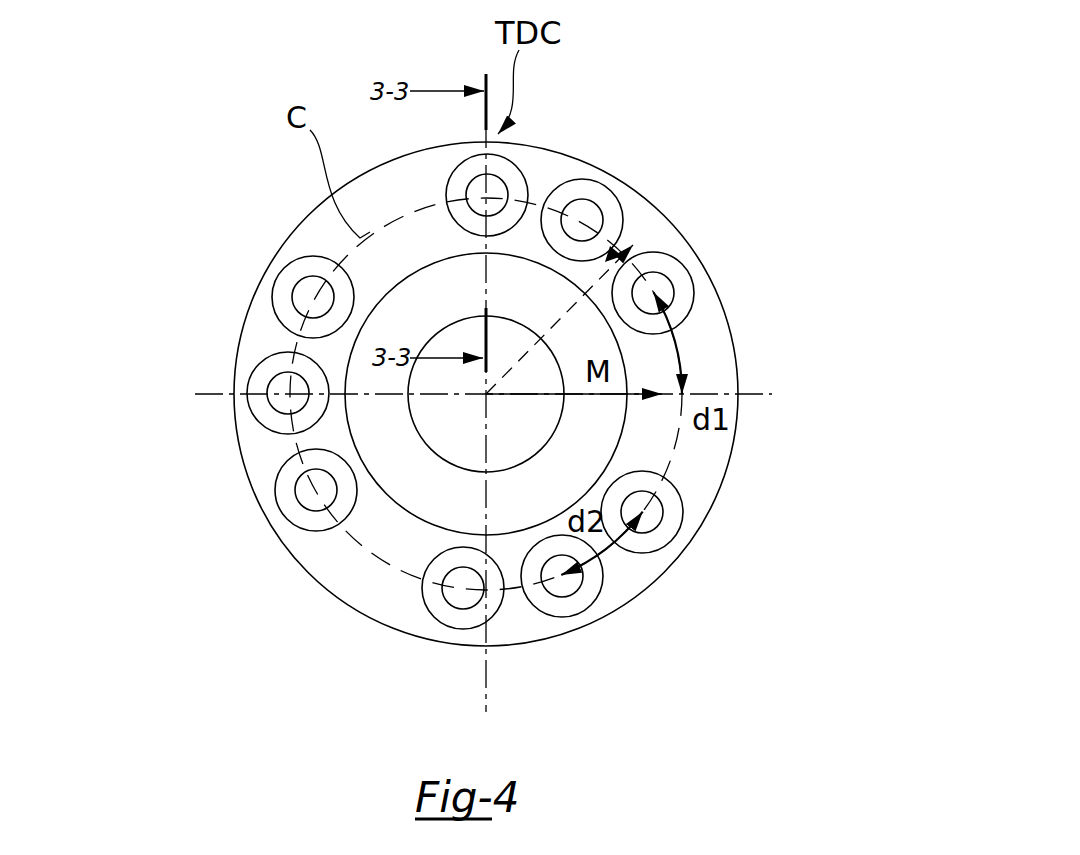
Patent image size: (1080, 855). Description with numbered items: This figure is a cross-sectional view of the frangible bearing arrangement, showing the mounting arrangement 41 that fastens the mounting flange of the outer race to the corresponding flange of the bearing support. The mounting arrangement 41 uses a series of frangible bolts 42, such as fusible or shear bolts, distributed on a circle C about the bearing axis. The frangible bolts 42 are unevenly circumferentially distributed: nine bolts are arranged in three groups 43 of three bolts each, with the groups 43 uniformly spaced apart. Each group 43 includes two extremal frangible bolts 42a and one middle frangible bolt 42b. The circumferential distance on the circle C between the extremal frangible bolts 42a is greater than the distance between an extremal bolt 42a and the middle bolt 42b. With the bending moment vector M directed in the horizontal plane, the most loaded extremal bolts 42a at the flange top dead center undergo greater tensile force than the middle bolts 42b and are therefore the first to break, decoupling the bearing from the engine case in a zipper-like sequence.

The mounting arrangement 41 is at (563, 402).
The frangible bolts 42 is at (420, 400).
The extremal frangible bolts 42a is at (449, 180).
The middle frangible bolt 42b is at (620, 199).
The groups of bolts 43 is at (868, 137).